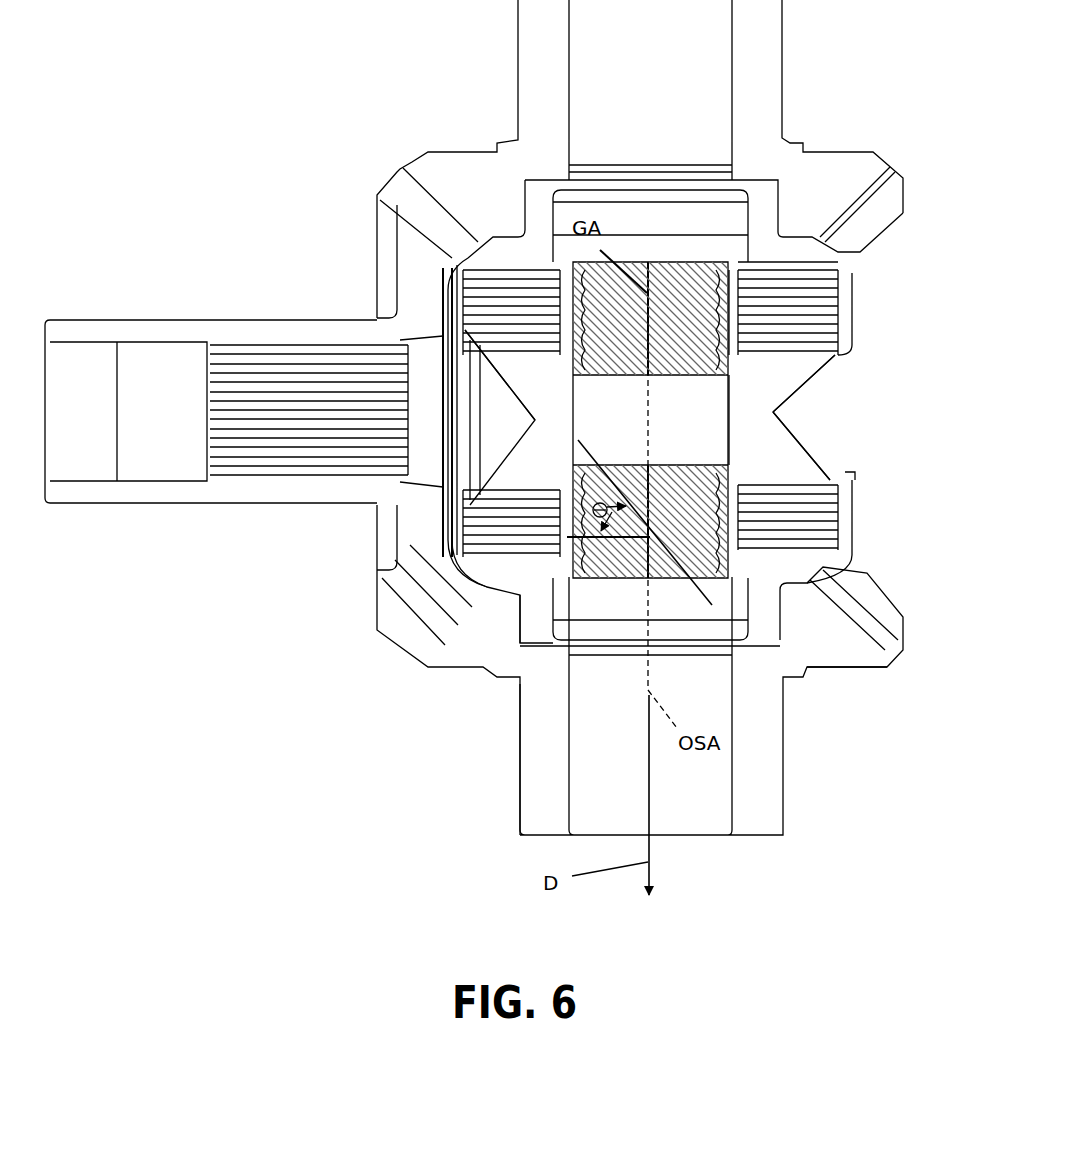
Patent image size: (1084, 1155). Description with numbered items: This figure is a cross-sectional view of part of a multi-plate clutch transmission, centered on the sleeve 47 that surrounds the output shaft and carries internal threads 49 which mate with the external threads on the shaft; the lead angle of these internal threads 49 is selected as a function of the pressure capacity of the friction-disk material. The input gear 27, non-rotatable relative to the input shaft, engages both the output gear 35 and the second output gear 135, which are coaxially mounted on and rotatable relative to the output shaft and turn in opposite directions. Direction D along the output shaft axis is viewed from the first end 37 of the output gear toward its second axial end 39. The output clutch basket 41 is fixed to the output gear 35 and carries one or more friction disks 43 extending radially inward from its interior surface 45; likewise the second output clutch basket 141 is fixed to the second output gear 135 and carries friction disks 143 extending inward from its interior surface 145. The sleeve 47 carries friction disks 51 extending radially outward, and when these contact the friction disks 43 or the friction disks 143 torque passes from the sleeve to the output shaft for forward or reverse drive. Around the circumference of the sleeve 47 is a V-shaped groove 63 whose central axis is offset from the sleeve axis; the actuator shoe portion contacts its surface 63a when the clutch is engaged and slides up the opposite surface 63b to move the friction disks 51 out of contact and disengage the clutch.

The input gear 27 is at (410, 239).
The output gear 35 is at (827, 620).
The first end 37 is at (870, 582).
The second axial end 39 is at (748, 838).
The output clutch basket 41 is at (840, 527).
The friction disks 43 is at (478, 528).
The interior surface 45 is at (483, 540).
The sleeve 47 is at (497, 372).
The internal threads 49 is at (690, 495).
The friction disks 51 is at (520, 537).
The groove 63 is at (500, 420).
The surface 63a is at (805, 445).
The opposite surface 63b is at (805, 393).
The second output gear 135 is at (815, 182).
The second output clutch basket 141 is at (845, 292).
The friction disks 143 is at (802, 293).
The interior surface 145 is at (830, 322).